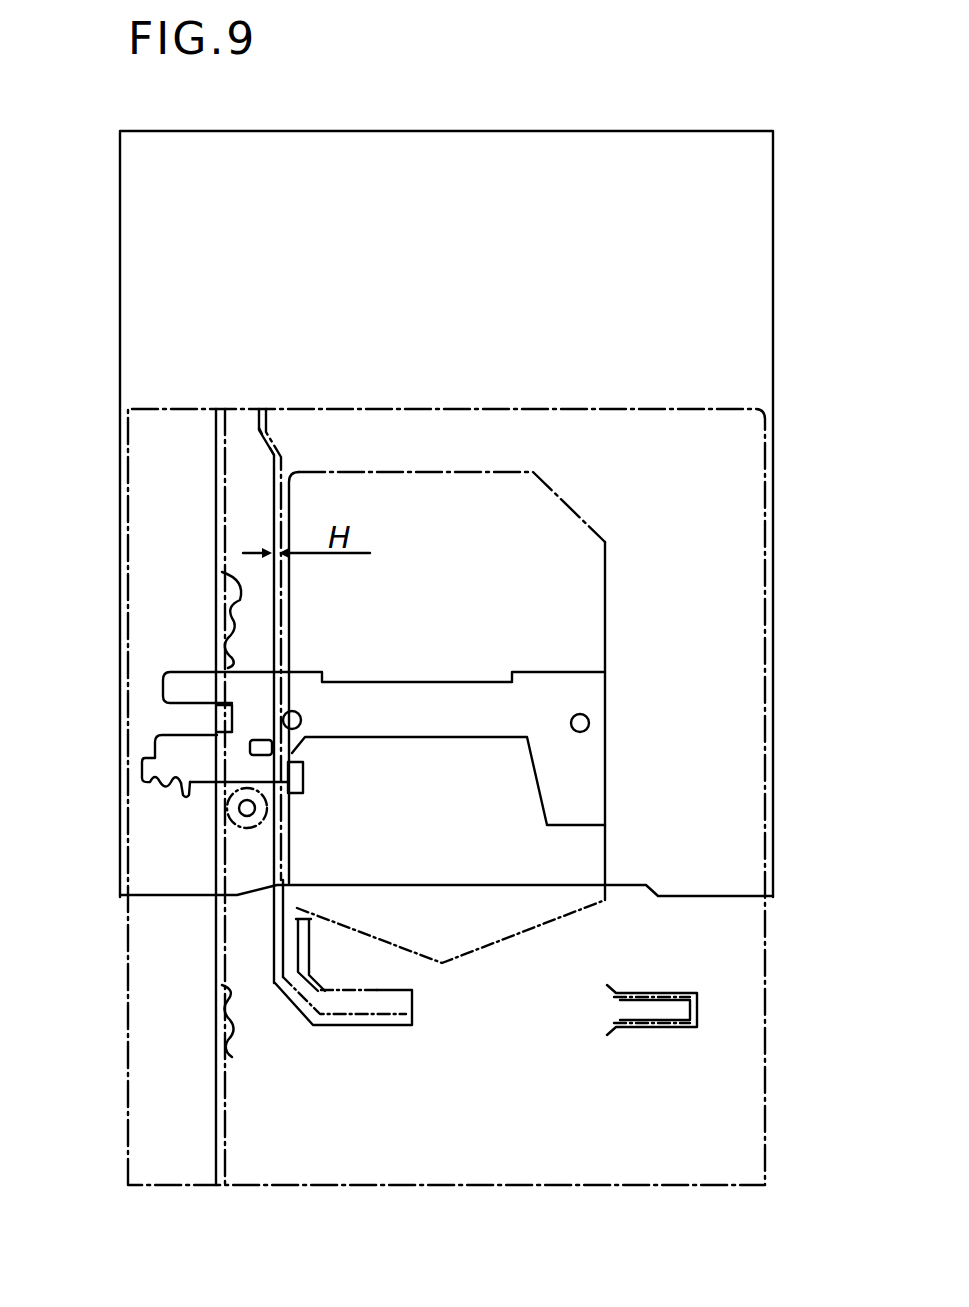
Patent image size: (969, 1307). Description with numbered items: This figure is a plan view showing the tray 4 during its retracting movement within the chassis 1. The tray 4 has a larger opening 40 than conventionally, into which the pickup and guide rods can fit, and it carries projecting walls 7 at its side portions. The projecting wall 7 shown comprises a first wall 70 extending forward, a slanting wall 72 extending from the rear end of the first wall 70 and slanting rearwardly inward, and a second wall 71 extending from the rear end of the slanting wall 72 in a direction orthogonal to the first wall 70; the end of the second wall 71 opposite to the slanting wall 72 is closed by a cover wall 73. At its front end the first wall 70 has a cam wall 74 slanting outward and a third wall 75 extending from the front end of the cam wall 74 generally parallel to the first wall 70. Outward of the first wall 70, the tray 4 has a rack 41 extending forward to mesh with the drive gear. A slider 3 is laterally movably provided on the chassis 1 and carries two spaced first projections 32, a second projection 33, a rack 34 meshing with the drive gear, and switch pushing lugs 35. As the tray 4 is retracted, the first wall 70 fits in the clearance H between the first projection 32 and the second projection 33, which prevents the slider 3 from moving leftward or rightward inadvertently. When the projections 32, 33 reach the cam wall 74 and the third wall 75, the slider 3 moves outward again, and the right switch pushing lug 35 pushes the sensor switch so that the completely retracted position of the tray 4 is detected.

The chassis 1 is at (742, 294).
The slider 3 is at (587, 803).
The tray 4 is at (730, 595).
The projecting wall 7 is at (440, 892).
The first projection 32 is at (300, 715).
The second projection 33 is at (262, 738).
The rack 34 is at (158, 785).
The switch pushing lug 35 is at (303, 770).
The opening 40 is at (605, 563).
The rack 41 is at (222, 572).
The first wall 70 is at (283, 862).
The second wall 71 is at (383, 1017).
The slanting wall 72 is at (313, 985).
The cover wall 73 is at (673, 992).
The cam wall 74 is at (270, 447).
The third wall 75 is at (267, 420).